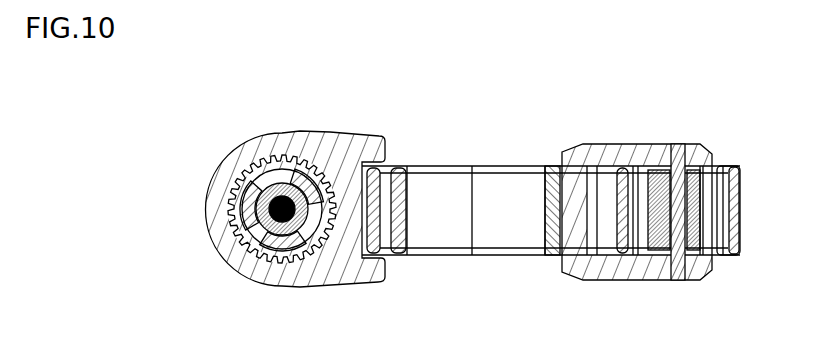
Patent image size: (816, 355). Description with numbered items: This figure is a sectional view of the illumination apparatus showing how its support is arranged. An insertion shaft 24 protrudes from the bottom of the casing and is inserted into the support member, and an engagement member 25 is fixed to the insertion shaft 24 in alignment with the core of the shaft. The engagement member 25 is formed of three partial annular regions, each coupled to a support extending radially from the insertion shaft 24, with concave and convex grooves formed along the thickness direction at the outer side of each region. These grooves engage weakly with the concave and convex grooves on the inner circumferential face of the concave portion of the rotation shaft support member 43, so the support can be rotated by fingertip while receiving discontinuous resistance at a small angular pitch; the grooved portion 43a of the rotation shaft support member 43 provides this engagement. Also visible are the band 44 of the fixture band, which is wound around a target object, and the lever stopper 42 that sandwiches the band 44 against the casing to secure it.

The insertion shaft 24 is at (279, 236).
The engagement member 25 is at (317, 165).
The lever stopper 42 is at (658, 242).
The rotation shaft support member 43 is at (242, 266).
The engaging portion of housing 43a is at (261, 156).
The band 44 is at (733, 237).